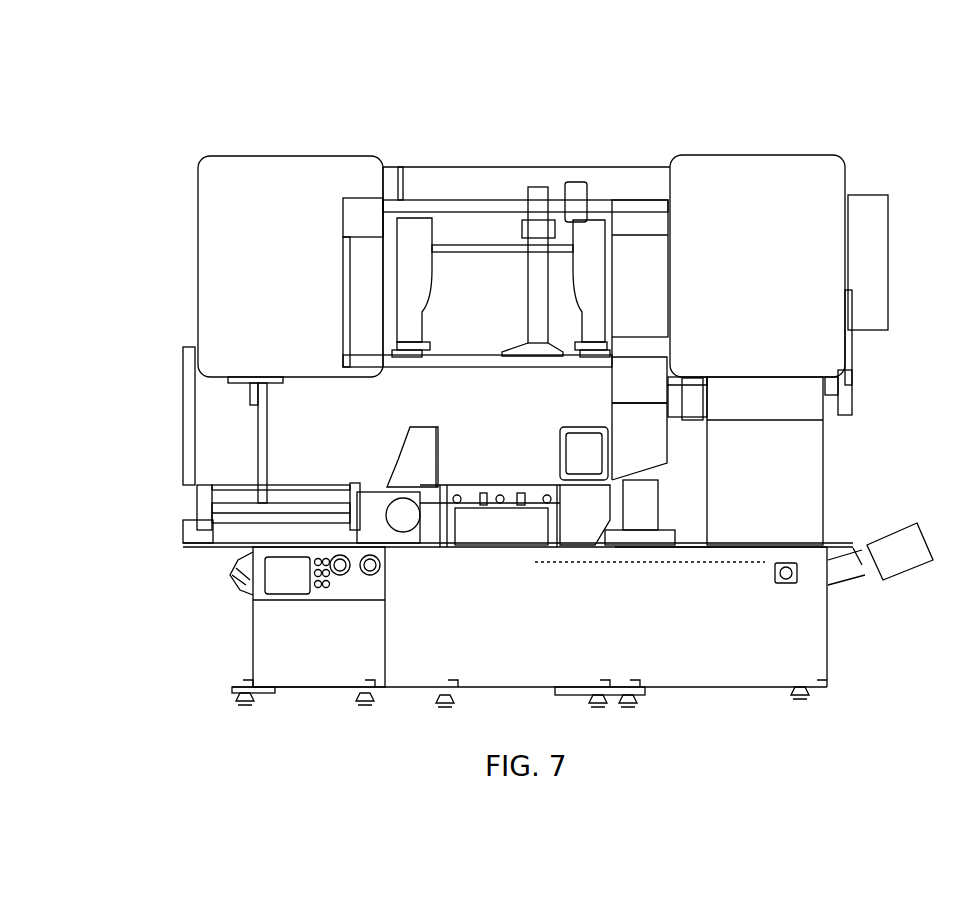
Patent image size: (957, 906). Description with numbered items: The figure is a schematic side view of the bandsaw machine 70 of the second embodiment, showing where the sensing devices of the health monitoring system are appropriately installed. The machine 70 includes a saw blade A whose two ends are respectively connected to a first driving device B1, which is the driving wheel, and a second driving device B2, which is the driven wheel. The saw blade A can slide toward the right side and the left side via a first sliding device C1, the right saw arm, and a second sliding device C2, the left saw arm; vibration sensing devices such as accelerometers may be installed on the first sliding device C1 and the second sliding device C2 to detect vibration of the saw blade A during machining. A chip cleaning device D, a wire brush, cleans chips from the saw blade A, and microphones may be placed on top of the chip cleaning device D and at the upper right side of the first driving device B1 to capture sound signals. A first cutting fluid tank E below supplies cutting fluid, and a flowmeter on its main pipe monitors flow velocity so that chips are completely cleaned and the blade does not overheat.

The bandsaw machine 70 is at (112, 61).
The second driving device B2 is at (283, 240).
The second sliding device C2 is at (420, 235).
The first sliding device C1 is at (593, 235).
The first driving device B1 is at (760, 195).
The chip cleaning device D is at (693, 385).
The saw blade A is at (640, 405).
The first cutting fluid tank E is at (715, 555).